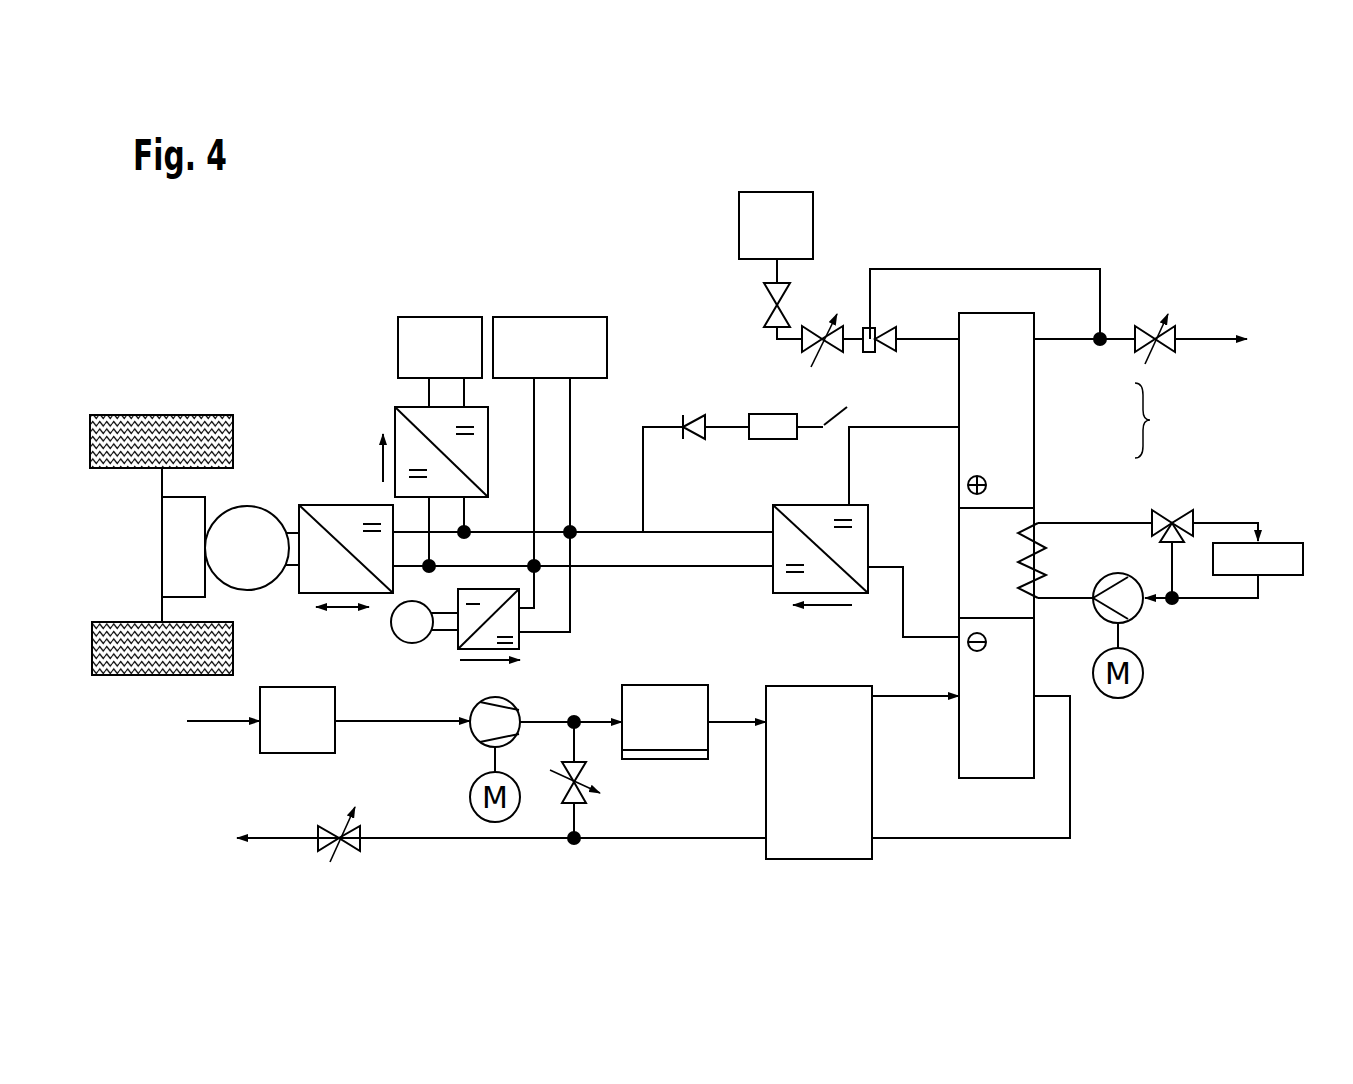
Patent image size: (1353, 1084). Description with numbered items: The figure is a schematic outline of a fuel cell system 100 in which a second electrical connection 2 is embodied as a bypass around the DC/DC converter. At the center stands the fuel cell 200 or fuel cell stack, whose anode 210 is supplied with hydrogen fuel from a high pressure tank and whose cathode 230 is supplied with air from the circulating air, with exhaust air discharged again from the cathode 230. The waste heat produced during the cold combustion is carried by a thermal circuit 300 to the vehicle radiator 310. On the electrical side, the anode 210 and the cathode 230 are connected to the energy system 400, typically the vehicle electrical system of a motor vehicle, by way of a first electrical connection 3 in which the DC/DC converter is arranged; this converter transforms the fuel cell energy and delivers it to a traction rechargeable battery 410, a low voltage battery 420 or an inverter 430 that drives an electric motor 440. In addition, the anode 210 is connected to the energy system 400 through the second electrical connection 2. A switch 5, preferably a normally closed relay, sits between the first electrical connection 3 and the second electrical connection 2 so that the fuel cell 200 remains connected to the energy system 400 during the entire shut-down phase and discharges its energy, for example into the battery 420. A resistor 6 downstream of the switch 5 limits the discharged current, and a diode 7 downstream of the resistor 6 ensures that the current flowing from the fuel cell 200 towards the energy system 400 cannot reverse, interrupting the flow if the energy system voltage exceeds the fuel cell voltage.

The fuel cell system 100 is at (1108, 232).
The fuel cell 200 is at (1080, 545).
The anode 210 is at (1034, 412).
The cathode 230 is at (1036, 662).
The thermal circuit 300 is at (1116, 523).
The vehicle radiator 310 is at (1282, 577).
The energy system 400 is at (493, 263).
The traction rechargeable battery 410 is at (550, 317).
The low voltage battery 420 is at (440, 317).
The inverter 430 is at (338, 505).
The electric motor 440 is at (260, 505).
The second electrical connection 2 is at (660, 425).
The first electrical connection 3 is at (928, 430).
The switch 5 is at (833, 405).
The resistor 6 is at (760, 413).
The diode 7 is at (697, 414).